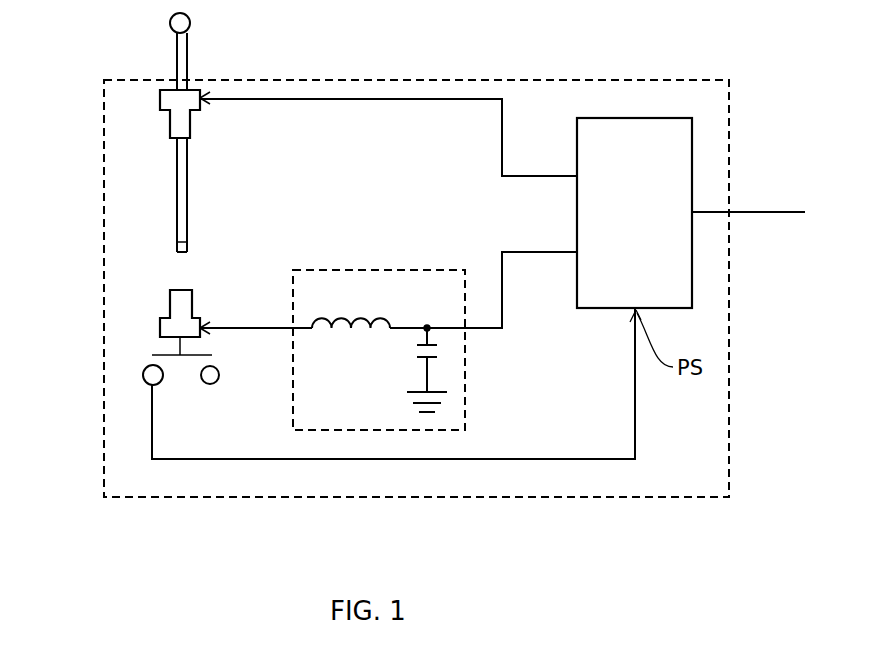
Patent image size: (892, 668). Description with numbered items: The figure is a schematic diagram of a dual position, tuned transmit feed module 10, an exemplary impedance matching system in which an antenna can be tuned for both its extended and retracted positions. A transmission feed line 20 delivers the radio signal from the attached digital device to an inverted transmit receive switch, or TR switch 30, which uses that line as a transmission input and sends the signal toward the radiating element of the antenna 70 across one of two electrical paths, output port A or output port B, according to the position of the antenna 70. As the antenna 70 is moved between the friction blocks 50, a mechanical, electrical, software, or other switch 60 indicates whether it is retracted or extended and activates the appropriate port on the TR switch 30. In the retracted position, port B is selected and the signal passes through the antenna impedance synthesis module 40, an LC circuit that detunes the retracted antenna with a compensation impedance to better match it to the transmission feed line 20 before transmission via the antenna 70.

The dual position tuned transmit feed module 10 is at (712, 107).
The transmission feed line 20 is at (762, 213).
The inverted transmit receive switch (TR switch) 30 is at (634, 213).
The antenna impedance synthesis module 40 is at (379, 350).
The friction blocks 50 is at (193, 128).
The switch 60 is at (142, 372).
The antenna 70 is at (176, 67).